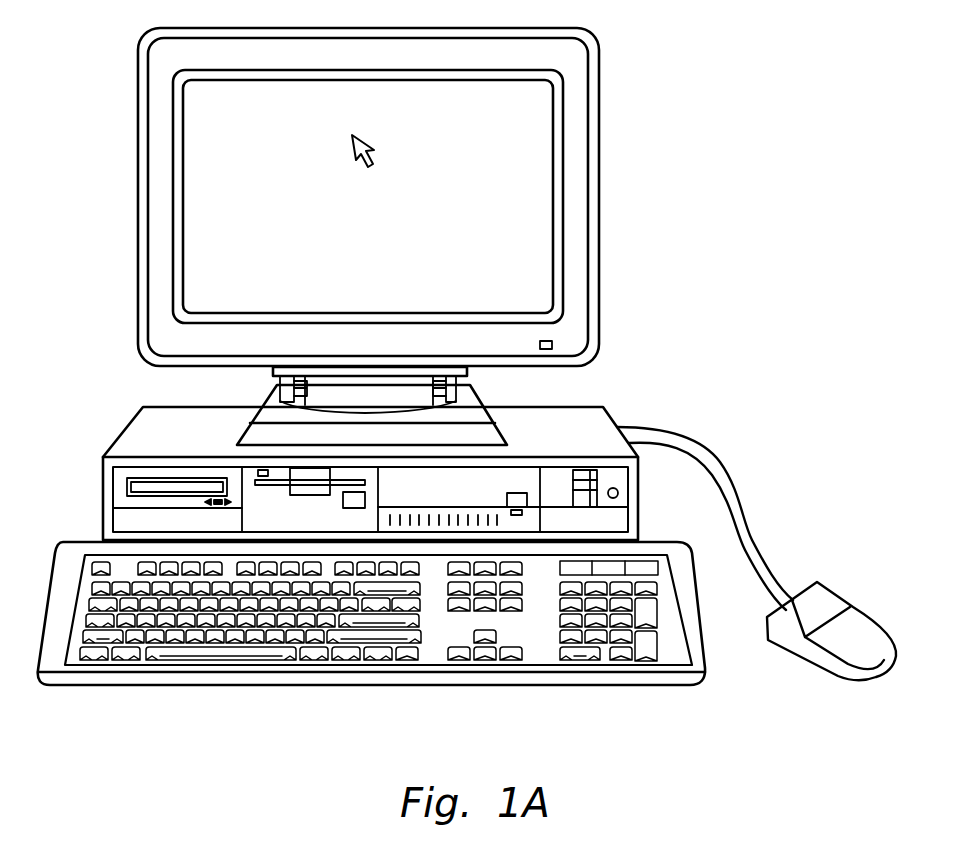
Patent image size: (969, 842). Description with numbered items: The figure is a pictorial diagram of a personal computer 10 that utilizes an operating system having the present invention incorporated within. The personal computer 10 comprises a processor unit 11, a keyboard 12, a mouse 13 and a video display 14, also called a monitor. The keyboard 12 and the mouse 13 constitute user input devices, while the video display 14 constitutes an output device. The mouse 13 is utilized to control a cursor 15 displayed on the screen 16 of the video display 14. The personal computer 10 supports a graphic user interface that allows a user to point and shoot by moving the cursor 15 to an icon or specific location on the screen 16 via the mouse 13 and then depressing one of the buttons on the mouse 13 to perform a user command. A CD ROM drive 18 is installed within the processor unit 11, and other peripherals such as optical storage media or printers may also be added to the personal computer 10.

The personal computer 10 is at (765, 270).
The processor unit 11 is at (336, 465).
The keyboard 12 is at (216, 684).
The mouse 13 is at (847, 598).
The video display 14 is at (600, 185).
The cursor 15 is at (378, 140).
The screen 16 is at (388, 238).
The CD ROM drive 18 is at (127, 488).